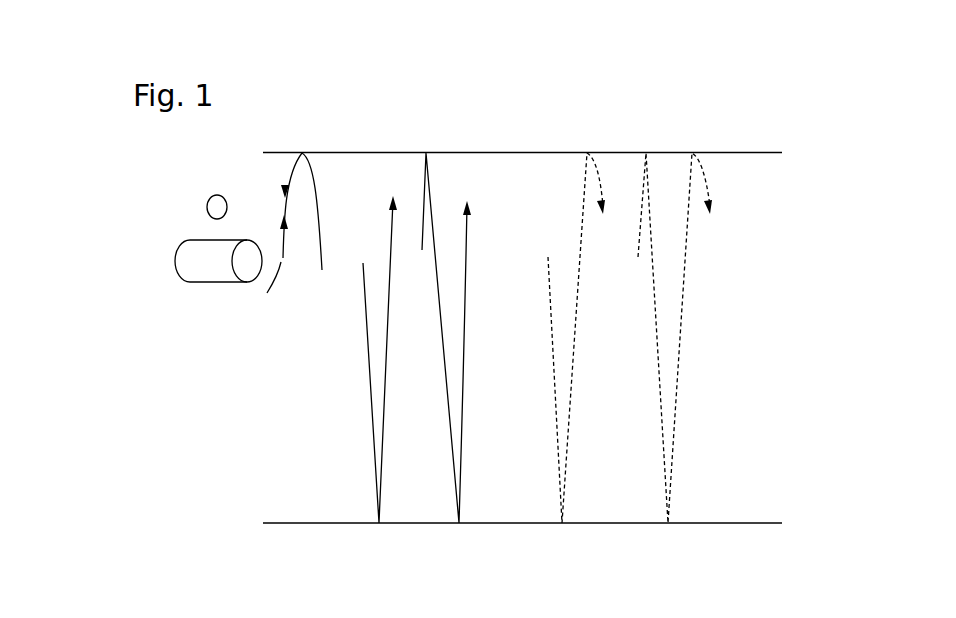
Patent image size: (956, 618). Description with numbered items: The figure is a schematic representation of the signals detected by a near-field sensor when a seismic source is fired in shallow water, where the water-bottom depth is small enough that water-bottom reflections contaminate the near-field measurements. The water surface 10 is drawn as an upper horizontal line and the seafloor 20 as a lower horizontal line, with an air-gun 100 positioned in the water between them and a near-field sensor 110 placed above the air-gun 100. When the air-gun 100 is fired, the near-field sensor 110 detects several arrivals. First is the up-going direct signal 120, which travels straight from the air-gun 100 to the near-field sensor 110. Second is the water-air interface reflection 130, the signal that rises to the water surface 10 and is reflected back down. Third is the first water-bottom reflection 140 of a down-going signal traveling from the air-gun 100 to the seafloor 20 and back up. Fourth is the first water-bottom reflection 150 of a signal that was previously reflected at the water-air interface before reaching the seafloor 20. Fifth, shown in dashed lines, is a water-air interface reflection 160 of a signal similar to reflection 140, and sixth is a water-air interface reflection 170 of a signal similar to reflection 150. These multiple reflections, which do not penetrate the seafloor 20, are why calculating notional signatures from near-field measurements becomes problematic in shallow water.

The water surface 10 is at (337, 152).
The seafloor 20 is at (327, 523).
The air-gun 100 is at (190, 281).
The near-field sensor 110 is at (207, 202).
The up-going direct signal 120 is at (262, 293).
The water-air interface reflection 130 is at (313, 177).
The first water-bottom reflection 140 is at (367, 390).
The first water-bottom reflection of surface-reflected signal 150 is at (433, 188).
The water-air interface reflection 160 is at (573, 350).
The water-air interface reflection 170 is at (680, 353).